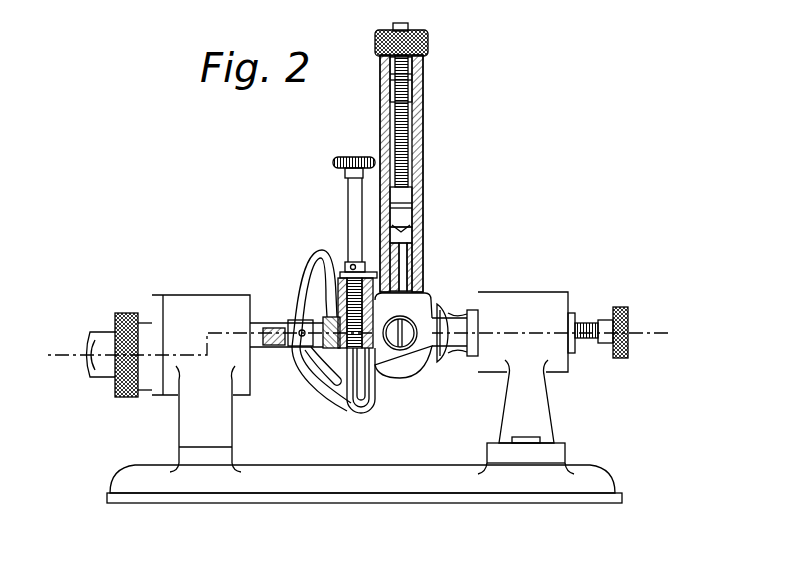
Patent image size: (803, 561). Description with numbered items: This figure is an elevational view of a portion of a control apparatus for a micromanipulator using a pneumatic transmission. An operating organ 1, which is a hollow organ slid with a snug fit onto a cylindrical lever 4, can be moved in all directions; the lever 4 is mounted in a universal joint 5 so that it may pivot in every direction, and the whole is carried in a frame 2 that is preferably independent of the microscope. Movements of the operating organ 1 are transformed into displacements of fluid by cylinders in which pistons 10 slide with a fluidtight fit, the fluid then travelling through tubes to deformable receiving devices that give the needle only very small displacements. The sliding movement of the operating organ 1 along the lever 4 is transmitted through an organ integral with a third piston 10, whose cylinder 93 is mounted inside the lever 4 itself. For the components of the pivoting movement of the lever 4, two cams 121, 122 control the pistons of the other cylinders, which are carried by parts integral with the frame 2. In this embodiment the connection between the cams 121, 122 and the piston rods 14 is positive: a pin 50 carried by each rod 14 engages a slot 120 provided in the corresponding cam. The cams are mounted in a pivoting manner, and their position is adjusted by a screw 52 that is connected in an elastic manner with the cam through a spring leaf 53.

The operating organ 1 is at (423, 41).
The frame 2 is at (418, 477).
The lever 4 is at (420, 143).
The universal joint 5 is at (428, 298).
The piston 10 is at (406, 217).
The cylinder 93 is at (407, 237).
The rod 14 is at (260, 322).
The pin 50 is at (302, 348).
The screw 52 is at (352, 157).
The spring leaf 53 is at (336, 381).
The slot 120 is at (313, 275).
The cam 121 is at (376, 387).
The cam 122 is at (298, 292).